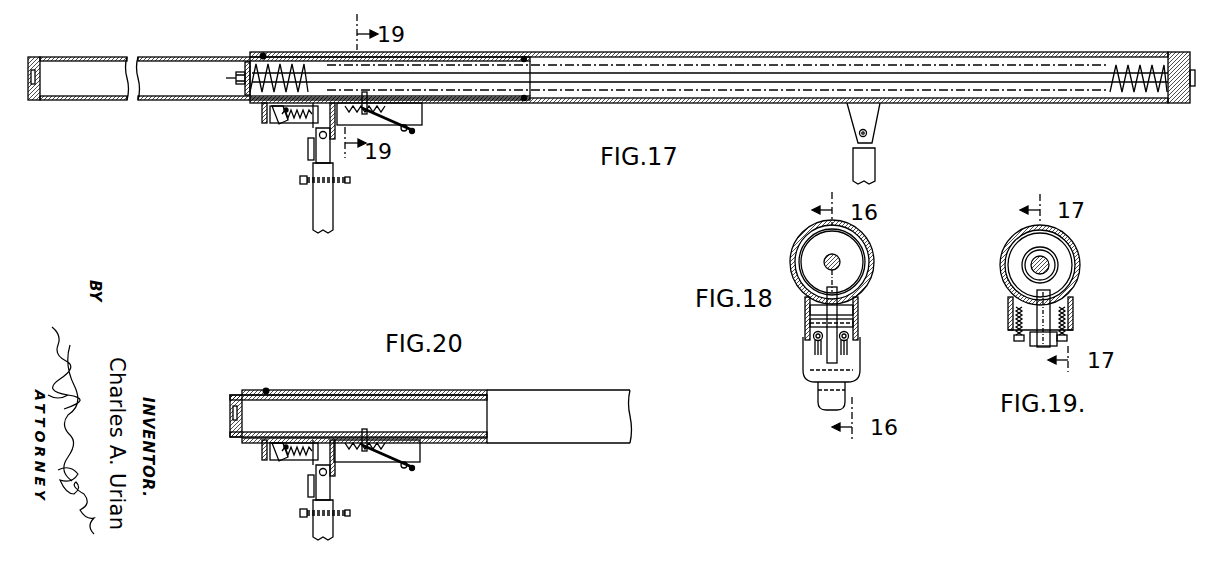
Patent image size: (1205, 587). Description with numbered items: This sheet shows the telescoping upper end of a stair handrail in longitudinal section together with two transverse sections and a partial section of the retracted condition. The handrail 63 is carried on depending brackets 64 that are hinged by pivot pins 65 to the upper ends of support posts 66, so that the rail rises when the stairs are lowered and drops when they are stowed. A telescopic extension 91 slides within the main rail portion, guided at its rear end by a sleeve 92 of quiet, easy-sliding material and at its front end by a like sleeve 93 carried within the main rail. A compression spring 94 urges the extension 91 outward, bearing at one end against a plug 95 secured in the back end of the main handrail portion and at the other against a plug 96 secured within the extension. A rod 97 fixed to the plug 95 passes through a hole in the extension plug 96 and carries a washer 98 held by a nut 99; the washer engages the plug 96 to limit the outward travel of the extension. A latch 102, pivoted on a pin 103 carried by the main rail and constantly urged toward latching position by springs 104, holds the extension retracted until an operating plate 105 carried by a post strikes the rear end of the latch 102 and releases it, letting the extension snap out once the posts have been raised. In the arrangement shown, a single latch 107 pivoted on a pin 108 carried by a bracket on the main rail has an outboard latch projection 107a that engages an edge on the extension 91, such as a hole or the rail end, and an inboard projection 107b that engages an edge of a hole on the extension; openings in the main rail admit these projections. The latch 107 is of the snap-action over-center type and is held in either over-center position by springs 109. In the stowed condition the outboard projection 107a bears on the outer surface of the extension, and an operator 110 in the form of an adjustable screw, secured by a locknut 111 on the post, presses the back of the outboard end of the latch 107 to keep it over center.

In FIG. 17, the handrail 63 is at (1008, 49).
In FIG. 18, the handrail 63 is at (868, 249).
In FIG. 19, the handrail 63 is at (1074, 247).
In FIG. 20, the handrail 63 is at (580, 393).
In FIG. 17, the depending bracket 64 is at (307, 140).
In FIG. 18, the depending bracket 64 is at (806, 328).
In FIG. 19, the depending bracket 64 is at (1074, 308).
In FIG. 20, the depending bracket 64 is at (306, 480).
In FIG. 17, the pivot pin 65 is at (330, 146).
In FIG. 20, the pivot pin 65 is at (331, 481).
In FIG. 17, the support post 66 is at (334, 227).
In FIG. 20, the support post 66 is at (334, 540).
In FIG. 17, the telescopic extension 91 is at (178, 57).
In FIG. 18, the telescopic extension 91 is at (794, 249).
In FIG. 19, the telescopic extension 91 is at (1007, 246).
In FIG. 20, the telescopic extension 91 is at (243, 392).
In FIG. 17, the sleeve 92 is at (530, 54).
In FIG. 17, the sleeve 93 is at (264, 54).
In FIG. 20, the sleeve 93 is at (268, 391).
In FIG. 17, the compression spring 94 is at (298, 66).
In FIG. 19, the compression spring 94 is at (1058, 268).
In FIG. 17, the plug 95 is at (1167, 103).
In FIG. 17, the plug 96 is at (249, 61).
In FIG. 17, the rod 97 is at (600, 77).
In FIG. 18, the rod 97 is at (841, 266).
In FIG. 19, the rod 97 is at (1031, 268).
In FIG. 17, the washer 98 is at (234, 70).
In FIG. 17, the nut 99 is at (235, 82).
In FIG. 17, the latch 102 is at (276, 118).
In FIG. 18, the latch 102 is at (838, 327).
In FIG. 20, the latch 102 is at (272, 460).
In FIG. 17, the pin 103 is at (285, 110).
In FIG. 18, the pin 103 is at (858, 318).
In FIG. 20, the pin 103 is at (300, 440).
In FIG. 17, the spring 104 is at (288, 121).
In FIG. 18, the spring 104 is at (853, 363).
In FIG. 20, the spring 104 is at (288, 460).
In FIG. 17, the operating plate 105 is at (311, 138).
In FIG. 20, the operating plate 105 is at (311, 475).
In FIG. 17, the latch 107 is at (415, 132).
In FIG. 19, the latch 107 is at (1040, 346).
In FIG. 20, the latch 107 is at (416, 464).
In FIG. 17, the outboard latch projection 107a is at (365, 110).
In FIG. 20, the outboard latch projection 107a is at (384, 461).
In FIG. 17, the inboard projection 107b is at (404, 132).
In FIG. 20, the inboard projection 107b is at (409, 434).
In FIG. 17, the pin 108 is at (423, 115).
In FIG. 20, the pin 108 is at (385, 462).
In FIG. 17, the spring 109 is at (363, 116).
In FIG. 19, the spring 109 is at (1016, 338).
In FIG. 20, the spring 109 is at (347, 460).
In FIG. 17, the operator 110 is at (336, 183).
In FIG. 20, the operator 110 is at (355, 510).
In FIG. 17, the locknut 111 is at (304, 185).
In FIG. 20, the locknut 111 is at (304, 518).